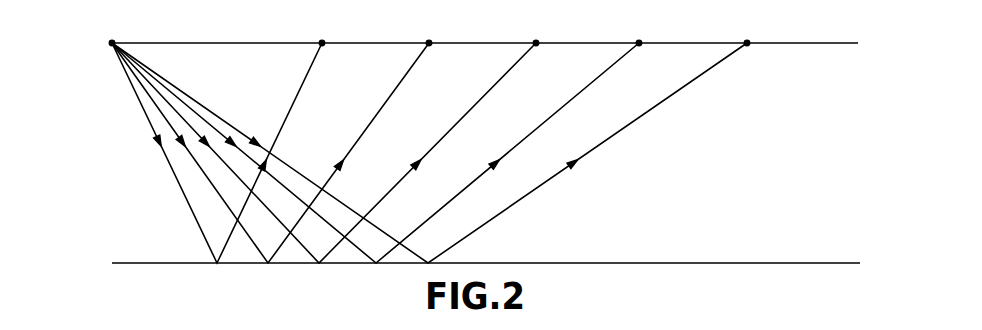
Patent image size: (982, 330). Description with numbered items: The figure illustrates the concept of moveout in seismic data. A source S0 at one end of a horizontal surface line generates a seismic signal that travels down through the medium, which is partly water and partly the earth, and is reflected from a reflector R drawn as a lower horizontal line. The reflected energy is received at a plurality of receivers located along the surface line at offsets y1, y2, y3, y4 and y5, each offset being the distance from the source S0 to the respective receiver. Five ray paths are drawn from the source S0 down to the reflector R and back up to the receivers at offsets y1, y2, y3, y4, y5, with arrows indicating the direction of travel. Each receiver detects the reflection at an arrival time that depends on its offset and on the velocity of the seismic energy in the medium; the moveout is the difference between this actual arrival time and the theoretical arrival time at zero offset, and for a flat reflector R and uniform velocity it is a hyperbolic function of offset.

The source S0 is at (469, 27).
The receiver offset y1 is at (222, 134).
The receiver offset y2 is at (276, 134).
The receiver offset y3 is at (329, 134).
The receiver offset y4 is at (381, 134).
The receiver offset y5 is at (435, 134).
The reflector R is at (470, 244).